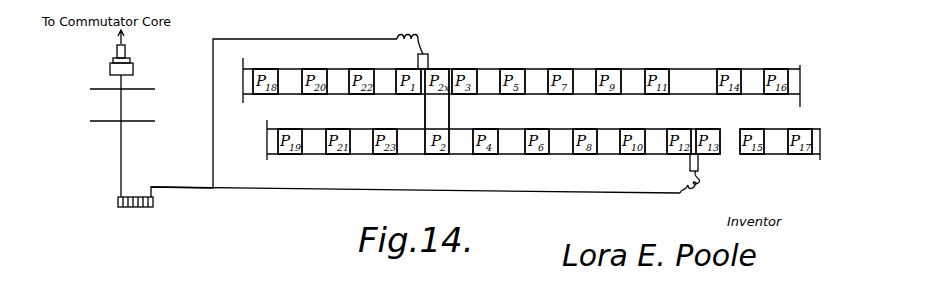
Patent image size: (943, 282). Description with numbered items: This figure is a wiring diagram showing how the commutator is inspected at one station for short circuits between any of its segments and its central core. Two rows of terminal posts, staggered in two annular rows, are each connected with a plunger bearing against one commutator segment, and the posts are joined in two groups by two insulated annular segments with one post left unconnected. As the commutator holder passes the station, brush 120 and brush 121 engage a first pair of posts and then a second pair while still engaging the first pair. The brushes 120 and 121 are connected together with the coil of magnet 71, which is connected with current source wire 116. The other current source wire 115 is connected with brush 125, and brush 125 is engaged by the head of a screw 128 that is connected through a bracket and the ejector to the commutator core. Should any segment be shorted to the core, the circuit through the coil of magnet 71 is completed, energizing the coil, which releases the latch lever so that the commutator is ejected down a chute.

The magnet 71 is at (131, 208).
The current source wire 115 is at (100, 89).
The current source wire 116 is at (98, 122).
The brush 120 is at (429, 57).
The brush 121 is at (700, 171).
The brush 125 is at (110, 69).
The screw 128 is at (126, 59).